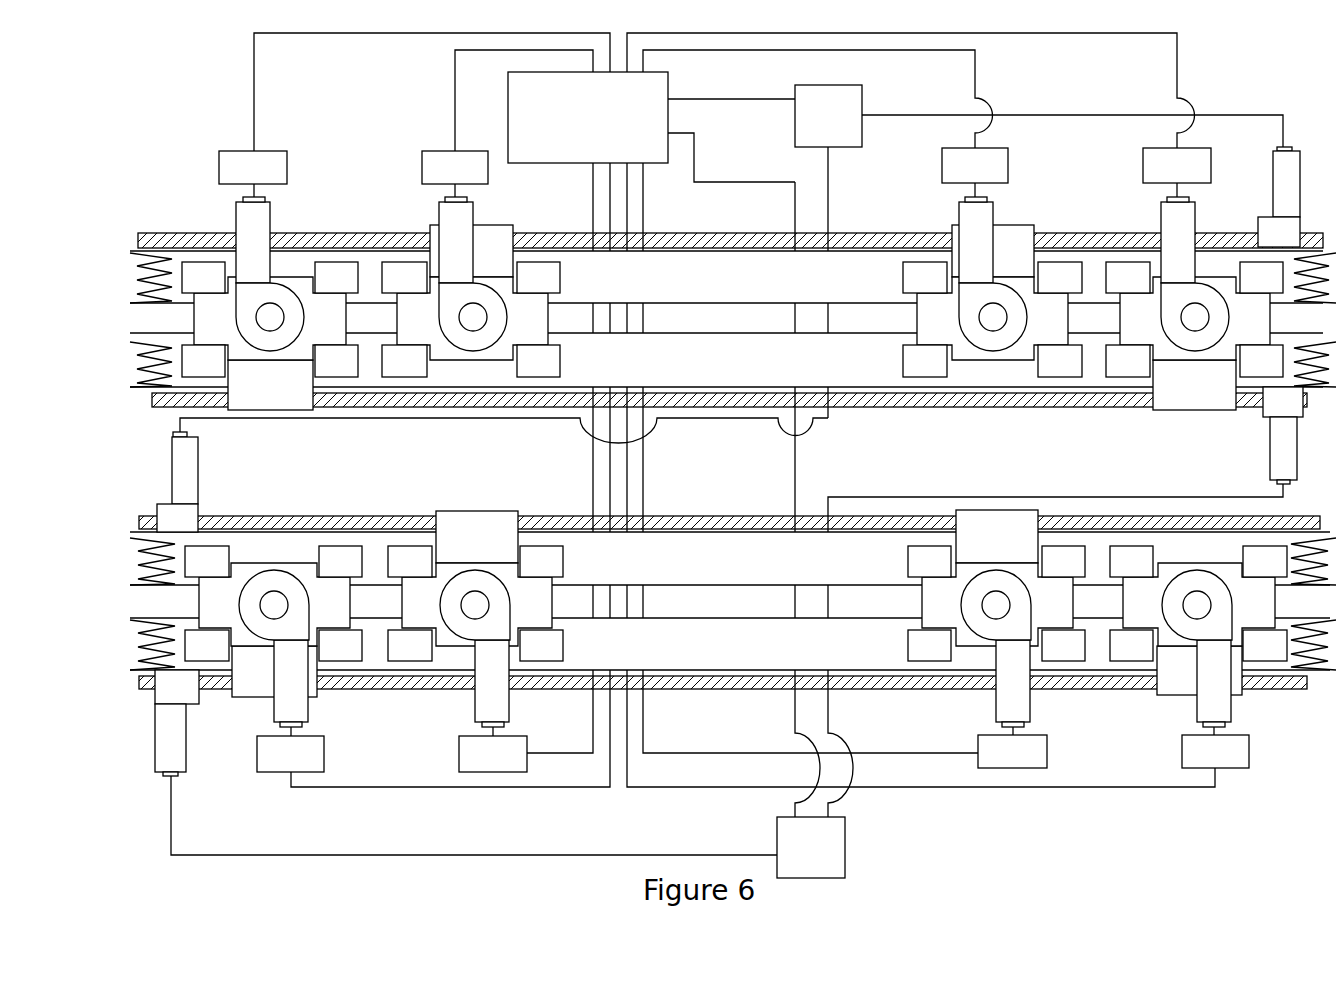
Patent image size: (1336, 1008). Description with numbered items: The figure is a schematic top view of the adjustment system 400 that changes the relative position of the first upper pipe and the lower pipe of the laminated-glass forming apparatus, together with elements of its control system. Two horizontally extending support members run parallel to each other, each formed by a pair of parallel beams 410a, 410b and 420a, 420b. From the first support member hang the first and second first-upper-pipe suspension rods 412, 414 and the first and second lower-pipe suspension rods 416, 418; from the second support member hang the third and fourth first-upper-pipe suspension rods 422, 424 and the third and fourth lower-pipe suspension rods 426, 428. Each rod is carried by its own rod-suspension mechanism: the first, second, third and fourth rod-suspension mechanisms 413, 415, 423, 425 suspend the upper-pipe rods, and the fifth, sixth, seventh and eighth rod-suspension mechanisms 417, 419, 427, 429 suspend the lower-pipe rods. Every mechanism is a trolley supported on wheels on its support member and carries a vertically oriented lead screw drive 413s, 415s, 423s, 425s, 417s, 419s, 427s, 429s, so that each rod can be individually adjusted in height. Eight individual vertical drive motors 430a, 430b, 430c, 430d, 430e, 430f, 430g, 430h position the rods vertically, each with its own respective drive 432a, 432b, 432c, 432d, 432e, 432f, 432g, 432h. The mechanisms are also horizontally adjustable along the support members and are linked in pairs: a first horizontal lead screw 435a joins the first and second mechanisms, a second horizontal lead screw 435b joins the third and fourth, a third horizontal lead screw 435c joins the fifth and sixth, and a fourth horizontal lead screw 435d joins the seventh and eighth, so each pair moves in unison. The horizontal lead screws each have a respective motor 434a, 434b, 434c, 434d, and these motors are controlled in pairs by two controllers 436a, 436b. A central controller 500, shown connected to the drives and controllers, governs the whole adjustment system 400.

The adjustment system 400 is at (1000, 813).
The parallel beam of first horizontally extending support member 410a is at (730, 644).
The parallel beam of first horizontally extending support member 410b is at (730, 558).
The first first-upper-pipe suspension rod 412 is at (475, 603).
The first rod-suspension mechanism 413 is at (475, 586).
The vertically oriented lead screw drive 413s is at (477, 579).
The second first-upper-pipe suspension rod 414 is at (993, 603).
The second rod-suspension mechanism 415 is at (996, 585).
The vertically oriented lead screw drive 415s is at (1015, 625).
The first lower-pipe suspension rod 416 is at (271, 603).
The fifth rod-suspension mechanism 417 is at (273, 621).
The vertically oriented lead screw drive 417s is at (278, 579).
The second lower-pipe suspension rod 418 is at (1198, 603).
The sixth rod-suspension mechanism 419 is at (1198, 620).
The vertically oriented lead screw drive 419s is at (1195, 625).
The parallel beam of second horizontally extending support member 420a is at (726, 360).
The parallel beam of second horizontally extending support member 420b is at (726, 277).
The third first-upper-pipe suspension rod 422 is at (477, 317).
The third rod-suspension mechanism 423 is at (471, 301).
The vertically oriented lead screw drive 423s is at (453, 297).
The fourth first-upper-pipe suspension rod 424 is at (1000, 317).
The fourth rod-suspension mechanism 425 is at (992, 301).
The vertically oriented lead screw drive 425s is at (975, 293).
The third lower-pipe suspension rod 426 is at (270, 317).
The seventh rod-suspension mechanism 427 is at (270, 336).
The vertically oriented lead screw drive 427s is at (292, 318).
The fourth lower-pipe suspension rod 428 is at (1200, 317).
The eighth rod-suspension mechanism 429 is at (1194, 336).
The vertically oriented lead screw drive 429s is at (1177, 293).
The vertical drive motor 430a is at (492, 688).
The vertical drive motor 430b is at (1013, 687).
The vertical drive motor 430c is at (456, 233).
The vertical drive motor 430d is at (976, 233).
The vertical drive motor 430e is at (291, 688).
The vertical drive motor 430f is at (1214, 687).
The vertical drive motor 430g is at (253, 233).
The vertical drive motor 430h is at (1178, 233).
The drive 432a is at (493, 754).
The drive 432b is at (1012, 751).
The drive 432c is at (455, 167).
The drive 432d is at (975, 165).
The drive 432e is at (290, 754).
The drive 432f is at (1215, 751).
The drive 432g is at (253, 167).
The drive 432h is at (1177, 165).
The motor 434a is at (177, 482).
The motor 434b is at (1279, 197).
The motor 434c is at (177, 723).
The motor 434d is at (1283, 435).
The first horizontal lead screw 435a is at (723, 516).
The second horizontal lead screw 435b is at (722, 242).
The third horizontal lead screw 435c is at (718, 689).
The fourth horizontal lead screw 435d is at (892, 407).
The controller 436a is at (811, 847).
The controller 436b is at (828, 116).
The central controller 500 is at (588, 117).